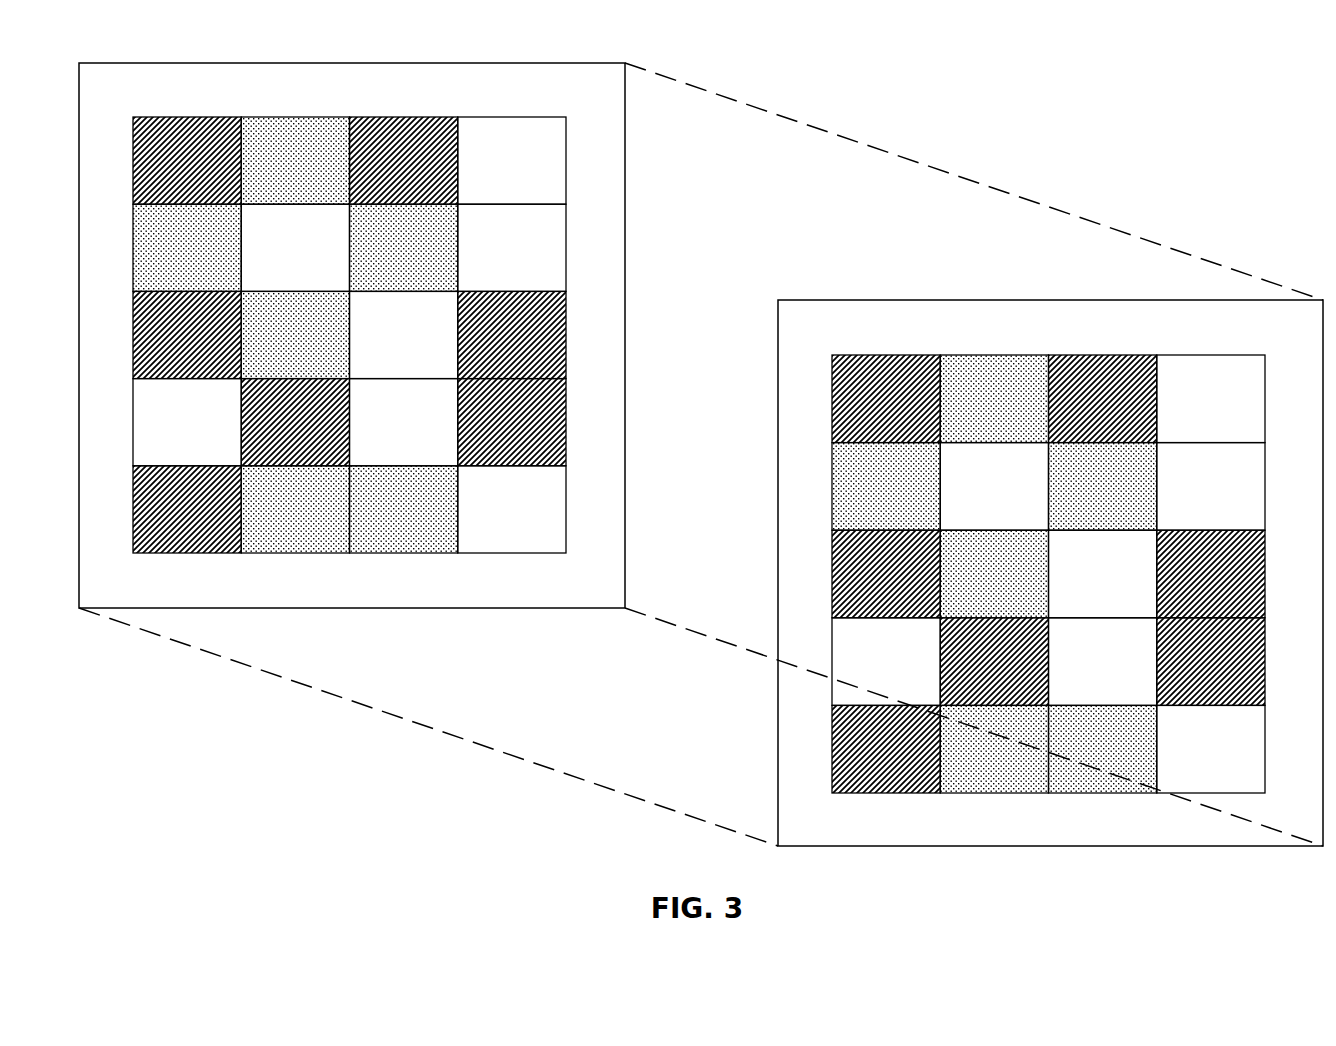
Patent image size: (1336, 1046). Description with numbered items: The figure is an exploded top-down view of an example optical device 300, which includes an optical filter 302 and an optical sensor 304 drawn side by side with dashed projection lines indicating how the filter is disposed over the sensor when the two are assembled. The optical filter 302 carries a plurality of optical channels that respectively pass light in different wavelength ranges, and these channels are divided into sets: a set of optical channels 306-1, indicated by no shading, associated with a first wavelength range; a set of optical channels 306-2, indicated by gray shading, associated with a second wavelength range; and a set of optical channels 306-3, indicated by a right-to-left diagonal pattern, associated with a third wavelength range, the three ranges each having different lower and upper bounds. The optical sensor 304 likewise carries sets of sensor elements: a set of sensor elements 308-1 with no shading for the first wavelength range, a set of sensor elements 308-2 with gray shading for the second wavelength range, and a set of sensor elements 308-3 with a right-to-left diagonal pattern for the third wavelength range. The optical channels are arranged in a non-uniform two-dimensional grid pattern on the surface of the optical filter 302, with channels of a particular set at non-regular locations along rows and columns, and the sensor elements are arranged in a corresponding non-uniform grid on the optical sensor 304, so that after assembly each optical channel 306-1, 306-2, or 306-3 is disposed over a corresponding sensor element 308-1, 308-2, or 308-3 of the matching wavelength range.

The optical device 300 is at (212, 29).
The optical filter 302 is at (407, 435).
The optical sensor 304 is at (1050, 530).
The set of optical channels 306-1 is at (273, 239).
The set of optical channels 306-2 is at (408, 252).
The set of optical channels 306-3 is at (510, 412).
The set of sensor elements 308-1 is at (983, 487).
The set of sensor elements 308-2 is at (1100, 493).
The set of sensor elements 308-3 is at (1220, 672).